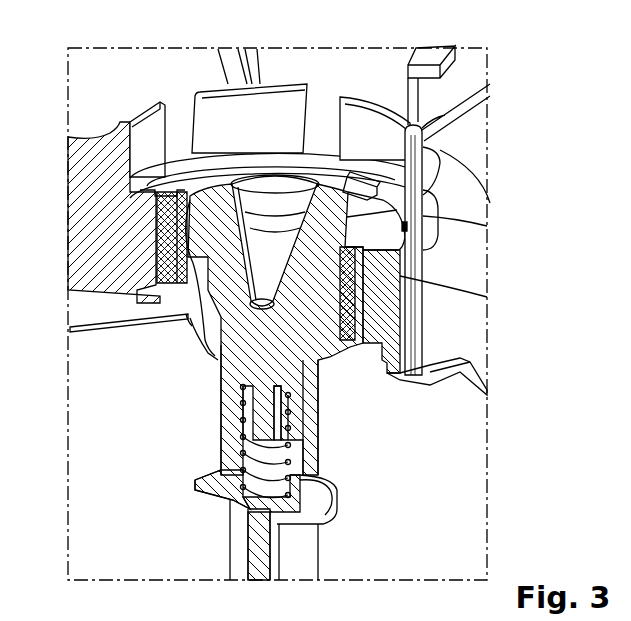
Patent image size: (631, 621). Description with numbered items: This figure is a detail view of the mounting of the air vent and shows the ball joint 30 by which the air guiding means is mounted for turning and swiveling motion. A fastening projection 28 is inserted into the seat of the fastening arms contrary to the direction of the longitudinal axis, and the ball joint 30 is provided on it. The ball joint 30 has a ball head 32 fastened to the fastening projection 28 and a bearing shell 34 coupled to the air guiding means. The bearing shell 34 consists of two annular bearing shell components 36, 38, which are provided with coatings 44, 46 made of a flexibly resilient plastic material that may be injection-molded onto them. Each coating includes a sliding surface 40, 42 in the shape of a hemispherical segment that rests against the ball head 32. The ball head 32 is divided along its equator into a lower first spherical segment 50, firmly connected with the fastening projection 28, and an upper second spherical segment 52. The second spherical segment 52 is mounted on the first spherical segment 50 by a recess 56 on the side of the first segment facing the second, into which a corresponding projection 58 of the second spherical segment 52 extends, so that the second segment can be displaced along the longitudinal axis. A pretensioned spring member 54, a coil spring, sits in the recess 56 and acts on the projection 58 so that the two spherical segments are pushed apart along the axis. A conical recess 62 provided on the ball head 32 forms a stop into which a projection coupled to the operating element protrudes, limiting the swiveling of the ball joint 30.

The fastening projection 28 is at (320, 505).
The ball joint 30 is at (373, 395).
The ball head 32 is at (188, 334).
The bearing shell 34 is at (181, 176).
The bearing shell component 36 is at (367, 272).
The bearing shell component 38 is at (452, 362).
The sliding surface 40 is at (323, 230).
The sliding surface 42 is at (322, 287).
The coating 44 is at (372, 218).
The coating 46 is at (358, 312).
The first spherical segment 50 is at (198, 294).
The second spherical segment 52 is at (185, 212).
The spring member 54 is at (253, 467).
The recess 56 is at (250, 427).
The projection 58 is at (287, 385).
The conical recess 62 is at (287, 207).